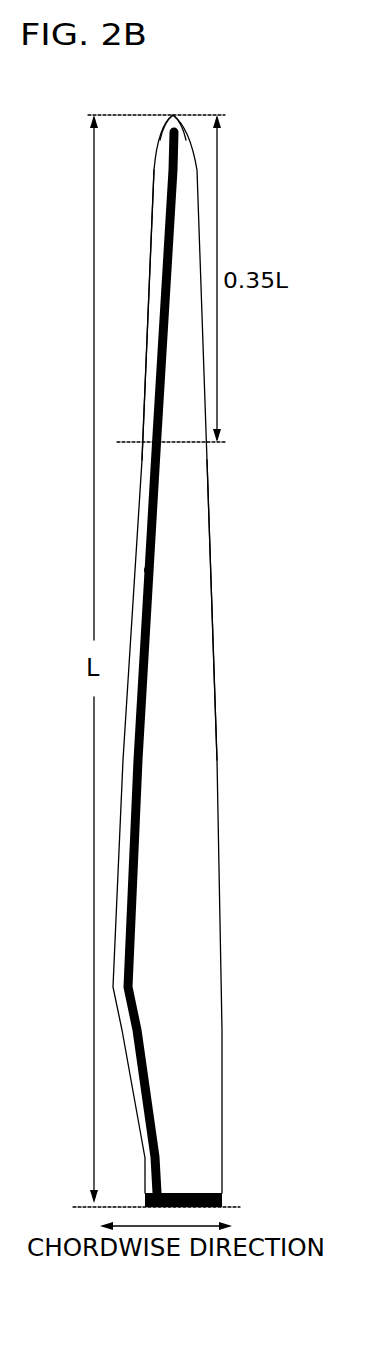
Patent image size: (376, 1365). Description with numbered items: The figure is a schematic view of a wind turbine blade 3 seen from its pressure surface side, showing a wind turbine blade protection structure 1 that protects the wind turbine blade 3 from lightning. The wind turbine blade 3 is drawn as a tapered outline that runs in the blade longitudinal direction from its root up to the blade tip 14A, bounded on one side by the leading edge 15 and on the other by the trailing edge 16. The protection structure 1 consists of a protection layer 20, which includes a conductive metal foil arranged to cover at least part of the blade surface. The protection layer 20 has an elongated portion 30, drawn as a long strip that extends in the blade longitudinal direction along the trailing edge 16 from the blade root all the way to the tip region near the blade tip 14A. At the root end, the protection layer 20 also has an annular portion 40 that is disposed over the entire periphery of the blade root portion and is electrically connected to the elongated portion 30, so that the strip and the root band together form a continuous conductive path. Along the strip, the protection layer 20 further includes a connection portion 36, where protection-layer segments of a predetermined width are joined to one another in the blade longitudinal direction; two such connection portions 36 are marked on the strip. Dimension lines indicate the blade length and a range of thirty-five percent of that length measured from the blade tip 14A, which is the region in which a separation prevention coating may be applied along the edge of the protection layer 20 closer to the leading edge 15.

The wind turbine blade protection structure 1 is at (278, 130).
The wind turbine blade 3 is at (195, 887).
The blade tip 14A is at (177, 109).
The leading edge 15 is at (208, 505).
The trailing edge 16 is at (149, 260).
The protection layer 20 is at (228, 669).
The elongated portion 30 is at (142, 790).
The annular portion 40 is at (190, 1193).
The connection portion 36 is at (152, 570).